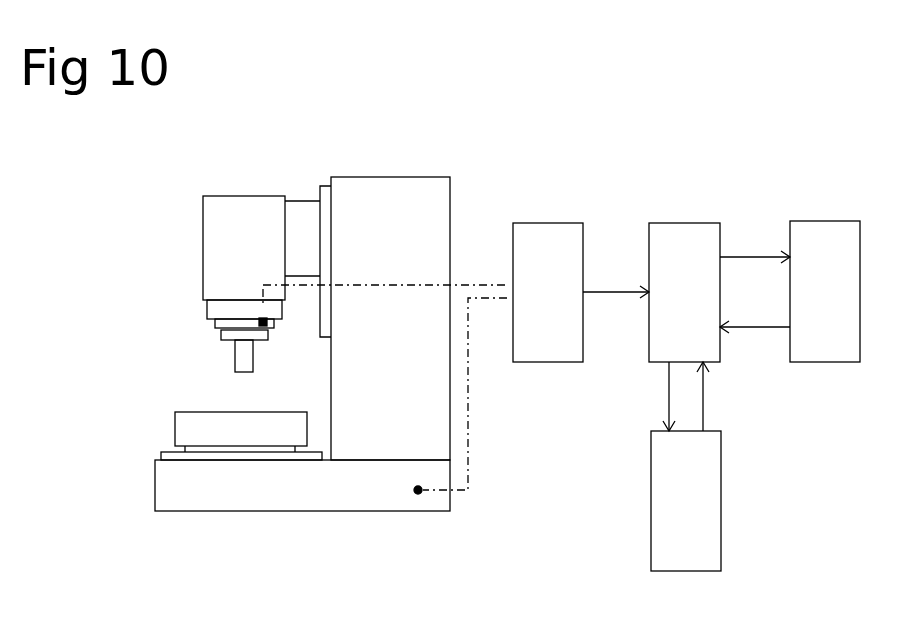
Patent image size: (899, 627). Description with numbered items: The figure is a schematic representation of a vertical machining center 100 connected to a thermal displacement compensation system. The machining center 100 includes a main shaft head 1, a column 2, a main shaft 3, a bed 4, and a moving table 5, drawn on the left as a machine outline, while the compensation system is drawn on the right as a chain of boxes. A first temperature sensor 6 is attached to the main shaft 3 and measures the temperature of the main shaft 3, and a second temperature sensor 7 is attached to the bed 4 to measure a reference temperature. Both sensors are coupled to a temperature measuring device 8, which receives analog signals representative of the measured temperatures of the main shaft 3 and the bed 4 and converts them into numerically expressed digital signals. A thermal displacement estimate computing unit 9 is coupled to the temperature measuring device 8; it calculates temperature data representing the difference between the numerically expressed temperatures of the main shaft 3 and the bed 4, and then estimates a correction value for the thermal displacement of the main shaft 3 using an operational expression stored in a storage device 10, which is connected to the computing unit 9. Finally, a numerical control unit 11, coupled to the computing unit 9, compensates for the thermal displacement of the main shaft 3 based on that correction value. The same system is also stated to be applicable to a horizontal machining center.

The vertical machining center 100 is at (387, 145).
The main shaft head 1 is at (245, 228).
The column 2 is at (406, 213).
The main shaft 3 is at (223, 310).
The bed 4 is at (416, 468).
The moving table 5 is at (195, 431).
The first temperature sensor 6 is at (263, 320).
The second temperature sensor 7 is at (455, 537).
The temperature measuring device 8 is at (548, 277).
The thermal displacement estimate computing unit 9 is at (683, 277).
The storage device 10 is at (702, 495).
The numerical control unit 11 is at (825, 277).